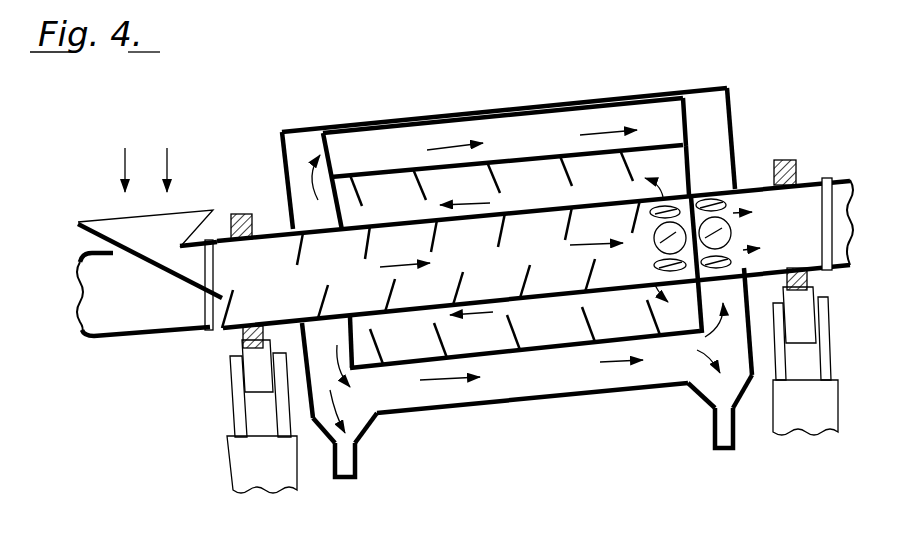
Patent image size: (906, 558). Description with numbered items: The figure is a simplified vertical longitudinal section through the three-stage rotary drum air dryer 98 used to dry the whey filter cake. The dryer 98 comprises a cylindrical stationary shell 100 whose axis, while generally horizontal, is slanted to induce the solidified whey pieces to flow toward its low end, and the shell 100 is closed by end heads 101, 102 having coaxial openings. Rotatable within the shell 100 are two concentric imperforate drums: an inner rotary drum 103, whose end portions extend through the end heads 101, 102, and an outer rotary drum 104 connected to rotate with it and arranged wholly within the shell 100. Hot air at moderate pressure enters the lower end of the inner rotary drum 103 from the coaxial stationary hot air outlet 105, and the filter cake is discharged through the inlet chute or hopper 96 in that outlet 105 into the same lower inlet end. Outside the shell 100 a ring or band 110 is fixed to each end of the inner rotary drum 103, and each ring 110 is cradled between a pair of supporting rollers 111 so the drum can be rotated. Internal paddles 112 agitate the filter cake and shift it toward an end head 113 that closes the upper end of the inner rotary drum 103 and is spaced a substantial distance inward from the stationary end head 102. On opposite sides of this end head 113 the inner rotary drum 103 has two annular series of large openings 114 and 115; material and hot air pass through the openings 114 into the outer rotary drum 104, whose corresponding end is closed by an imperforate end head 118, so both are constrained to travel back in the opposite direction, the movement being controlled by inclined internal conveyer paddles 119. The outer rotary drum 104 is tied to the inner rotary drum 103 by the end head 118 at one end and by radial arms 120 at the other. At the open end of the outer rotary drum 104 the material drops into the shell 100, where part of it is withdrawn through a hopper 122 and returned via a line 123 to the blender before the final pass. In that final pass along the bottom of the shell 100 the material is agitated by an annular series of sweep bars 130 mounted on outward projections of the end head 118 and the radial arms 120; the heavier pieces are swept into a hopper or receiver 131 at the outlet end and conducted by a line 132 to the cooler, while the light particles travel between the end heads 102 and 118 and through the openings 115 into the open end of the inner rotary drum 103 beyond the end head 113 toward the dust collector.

The inlet chute or hopper 96 is at (100, 222).
The dryer 98 is at (713, 84).
The cylindrical stationary shell 100 is at (305, 130).
The end head 101 is at (283, 148).
The end head 102 is at (730, 115).
The inner rotary drum 103 is at (532, 211).
The outer rotary drum 104 is at (553, 350).
The stationary hot air outlet 105 is at (80, 338).
The ring or band 110 is at (241, 212).
The supporting rollers 111 is at (238, 377).
The internal paddles 112 is at (497, 240).
The end head 113 is at (717, 233).
The openings 114 is at (662, 247).
The openings 115 is at (733, 238).
The end head 118 is at (689, 166).
The inclined internal conveyer paddles 119 is at (622, 175).
The radial arms 120 is at (334, 160).
The hopper 122 is at (368, 428).
The line 123 is at (358, 467).
The sweep bars 130 is at (513, 118).
The hopper or receiver 131 is at (700, 398).
The line 132 is at (713, 437).